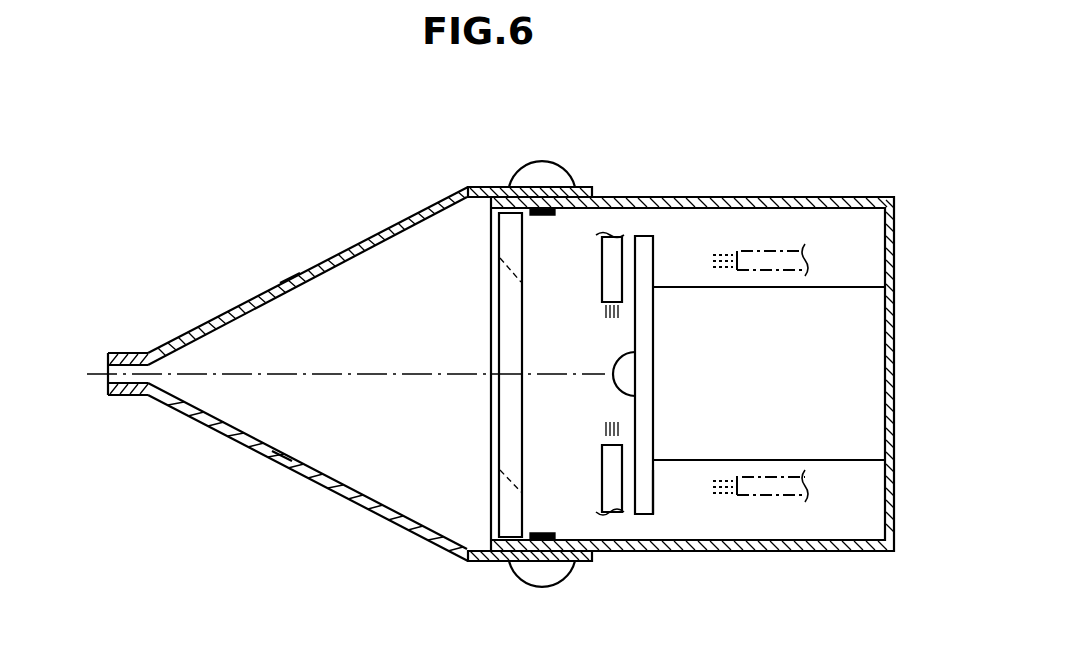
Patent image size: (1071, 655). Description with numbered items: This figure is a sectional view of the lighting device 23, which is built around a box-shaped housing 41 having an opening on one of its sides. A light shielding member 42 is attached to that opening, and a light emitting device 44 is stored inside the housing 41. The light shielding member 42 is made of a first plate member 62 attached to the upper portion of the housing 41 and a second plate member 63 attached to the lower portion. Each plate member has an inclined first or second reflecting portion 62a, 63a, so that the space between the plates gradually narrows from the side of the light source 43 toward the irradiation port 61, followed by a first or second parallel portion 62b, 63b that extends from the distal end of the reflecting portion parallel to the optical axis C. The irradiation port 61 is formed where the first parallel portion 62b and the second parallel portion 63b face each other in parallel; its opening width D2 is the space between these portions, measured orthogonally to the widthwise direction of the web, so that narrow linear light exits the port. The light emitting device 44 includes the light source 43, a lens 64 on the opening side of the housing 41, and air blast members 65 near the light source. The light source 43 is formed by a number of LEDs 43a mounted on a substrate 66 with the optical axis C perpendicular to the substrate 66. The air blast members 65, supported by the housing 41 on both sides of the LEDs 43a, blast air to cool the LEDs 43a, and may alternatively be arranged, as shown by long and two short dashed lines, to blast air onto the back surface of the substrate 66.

The lighting device 23 is at (190, 170).
The housing 41 is at (801, 196).
The light shielding member 42 is at (428, 167).
The light source 43 is at (606, 358).
The LEDs 43a is at (624, 384).
The light emitting device 44 is at (694, 284).
The irradiation port 61 is at (108, 392).
The first plate member 62 is at (368, 237).
The first reflecting portion 62a is at (293, 275).
The first parallel portion 62b is at (131, 360).
The second plate member 63 is at (356, 502).
The second reflecting portion 63a is at (283, 460).
The second parallel portion 63b is at (130, 396).
The lens 64 is at (498, 270).
The air blast members 65 is at (600, 262).
The substrate 66 is at (655, 483).
The optical axis C is at (312, 368).
The opening width D2 is at (104, 384).